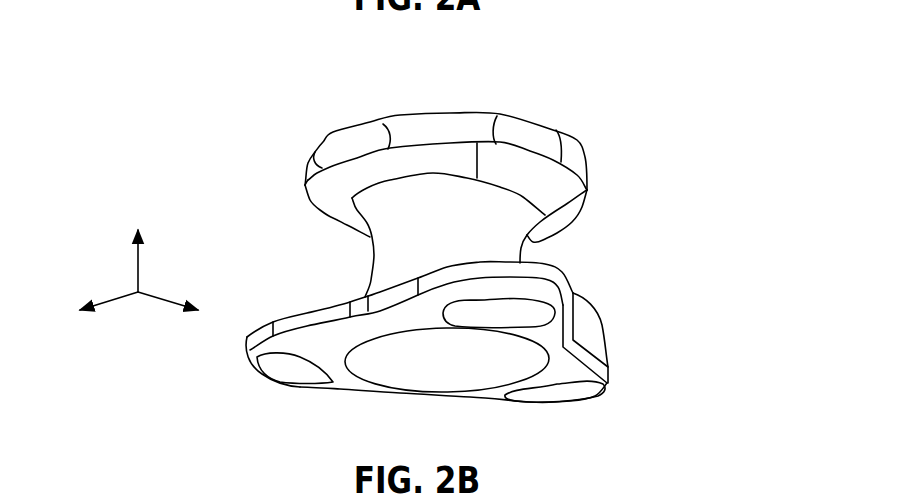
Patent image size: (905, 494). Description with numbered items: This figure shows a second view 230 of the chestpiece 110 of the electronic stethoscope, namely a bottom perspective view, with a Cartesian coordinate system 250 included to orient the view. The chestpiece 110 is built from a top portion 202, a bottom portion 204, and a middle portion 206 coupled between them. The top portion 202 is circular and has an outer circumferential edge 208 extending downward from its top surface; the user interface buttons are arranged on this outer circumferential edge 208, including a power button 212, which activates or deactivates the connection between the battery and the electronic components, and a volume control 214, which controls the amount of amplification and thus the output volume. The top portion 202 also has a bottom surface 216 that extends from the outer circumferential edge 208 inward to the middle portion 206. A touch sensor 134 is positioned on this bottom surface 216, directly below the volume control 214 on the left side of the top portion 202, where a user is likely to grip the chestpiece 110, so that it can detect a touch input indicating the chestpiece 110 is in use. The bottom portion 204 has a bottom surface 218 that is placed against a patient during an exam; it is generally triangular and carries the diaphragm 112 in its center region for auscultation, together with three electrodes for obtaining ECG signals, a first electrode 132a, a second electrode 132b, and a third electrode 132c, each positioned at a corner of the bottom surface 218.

The second view 230 is at (672, 76).
The chestpiece 110 is at (534, 101).
The top portion 202 is at (407, 117).
The power button 212 is at (325, 158).
The outer circumferential edge 208 is at (479, 127).
The volume control 214 is at (544, 136).
The bottom surface 216 is at (322, 185).
The touch sensor 134 is at (558, 192).
The middle portion 206 is at (400, 266).
The bottom portion 204 is at (542, 268).
The bottom surface 218 is at (349, 381).
The diaphragm 112 is at (431, 371).
The first electrode 132a is at (277, 365).
The second electrode 132b is at (558, 390).
The third electrode 132c is at (540, 313).
The Cartesian coordinate system 250 is at (112, 239).